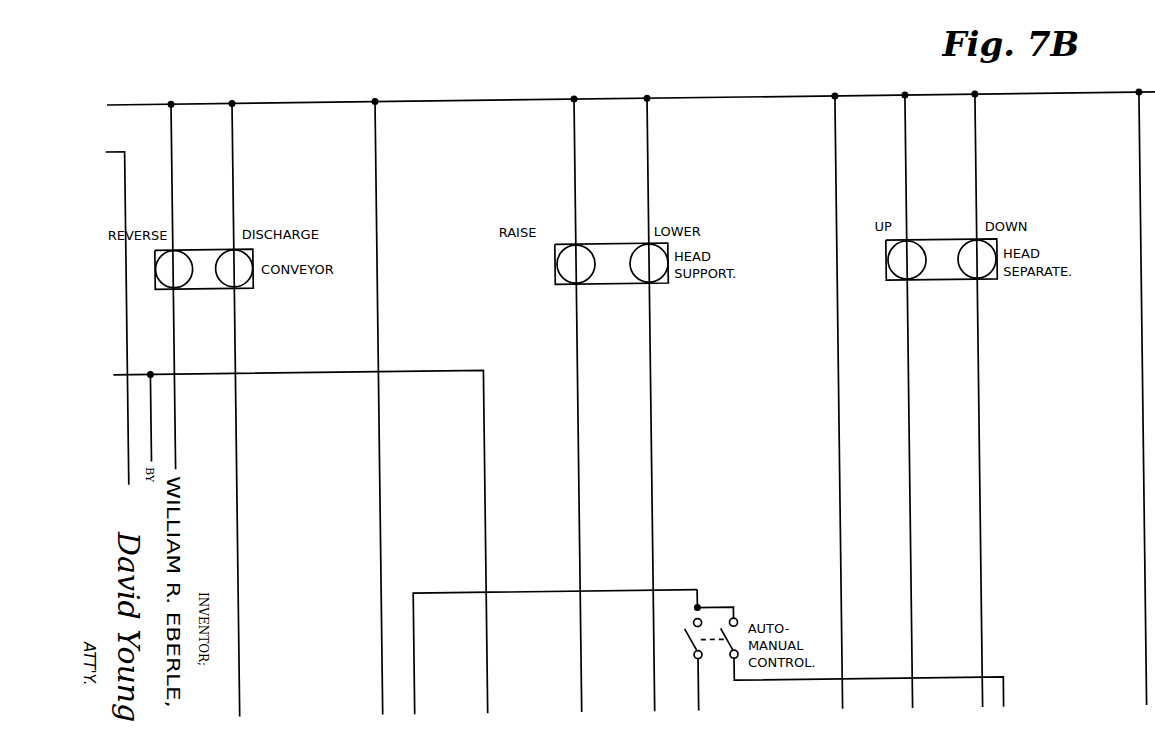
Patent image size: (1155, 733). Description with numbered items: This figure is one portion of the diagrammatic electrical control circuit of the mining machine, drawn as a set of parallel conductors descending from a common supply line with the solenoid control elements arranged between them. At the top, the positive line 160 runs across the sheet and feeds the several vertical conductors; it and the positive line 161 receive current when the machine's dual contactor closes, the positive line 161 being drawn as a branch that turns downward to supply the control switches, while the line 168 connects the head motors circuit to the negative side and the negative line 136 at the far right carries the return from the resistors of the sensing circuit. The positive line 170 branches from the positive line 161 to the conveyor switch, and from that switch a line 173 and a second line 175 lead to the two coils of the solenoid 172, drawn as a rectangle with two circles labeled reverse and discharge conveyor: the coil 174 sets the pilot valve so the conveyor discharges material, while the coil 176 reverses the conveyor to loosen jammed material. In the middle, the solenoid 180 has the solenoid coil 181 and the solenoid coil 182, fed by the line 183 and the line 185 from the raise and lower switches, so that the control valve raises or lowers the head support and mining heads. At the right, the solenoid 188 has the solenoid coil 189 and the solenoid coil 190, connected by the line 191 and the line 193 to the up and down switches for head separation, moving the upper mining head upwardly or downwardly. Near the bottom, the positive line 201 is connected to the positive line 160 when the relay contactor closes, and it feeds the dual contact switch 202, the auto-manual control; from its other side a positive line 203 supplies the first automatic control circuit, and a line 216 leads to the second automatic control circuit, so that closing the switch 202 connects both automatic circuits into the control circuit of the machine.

The negative line 136 is at (1146, 455).
The positive line 160 is at (114, 152).
The positive line 161 is at (484, 402).
The line 168 is at (378, 318).
The positive line 170 is at (152, 422).
The solenoid 172 is at (201, 250).
The line 173 is at (178, 450).
The coil 174 is at (172, 286).
The second line 175 is at (236, 463).
The coil 176 is at (242, 285).
The solenoid 180 is at (612, 285).
The solenoid coil 181 is at (567, 280).
The solenoid coil 182 is at (660, 280).
The line 183 is at (580, 473).
The line 185 is at (651, 490).
The solenoid 188 is at (942, 282).
The solenoid coil 189 is at (900, 275).
The solenoid coil 190 is at (980, 275).
The line 191 is at (908, 480).
The line 193 is at (980, 482).
The positive line 201 is at (525, 592).
The dual contact switch 202 is at (718, 605).
The positive line 203 is at (700, 695).
The line 216 is at (992, 677).